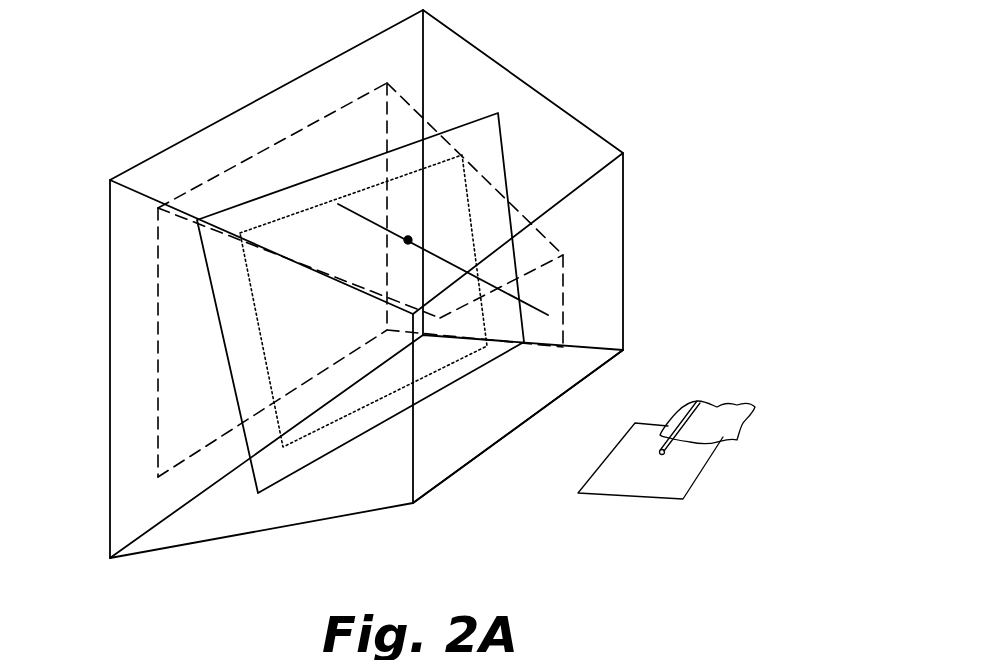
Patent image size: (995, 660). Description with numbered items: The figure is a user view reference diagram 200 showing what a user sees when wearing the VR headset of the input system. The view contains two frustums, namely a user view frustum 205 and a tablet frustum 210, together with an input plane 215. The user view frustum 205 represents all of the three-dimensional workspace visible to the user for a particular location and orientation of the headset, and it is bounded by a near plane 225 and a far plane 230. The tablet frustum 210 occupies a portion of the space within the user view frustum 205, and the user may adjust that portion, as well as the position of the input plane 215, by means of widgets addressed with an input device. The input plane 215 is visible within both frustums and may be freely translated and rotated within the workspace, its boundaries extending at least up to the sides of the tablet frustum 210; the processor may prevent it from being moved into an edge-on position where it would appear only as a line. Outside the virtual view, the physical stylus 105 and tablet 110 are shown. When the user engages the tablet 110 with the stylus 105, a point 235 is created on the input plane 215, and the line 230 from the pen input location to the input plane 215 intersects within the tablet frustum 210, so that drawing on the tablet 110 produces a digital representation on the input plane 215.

The user view reference diagram 200 is at (200, 48).
The user view frustum 205 is at (530, 88).
The tablet frustum 210 is at (570, 294).
The input plane 215 is at (500, 160).
The near plane 225 is at (456, 500).
The far plane 230 is at (144, 125).
The point 235 is at (427, 231).
The stylus 105 is at (674, 443).
The tablet 110 is at (648, 475).